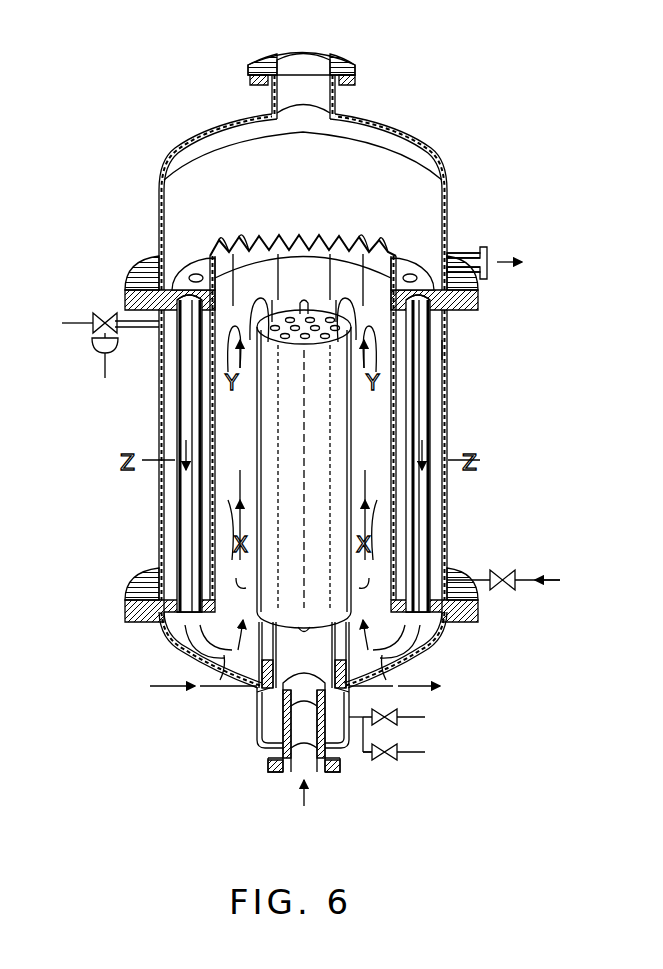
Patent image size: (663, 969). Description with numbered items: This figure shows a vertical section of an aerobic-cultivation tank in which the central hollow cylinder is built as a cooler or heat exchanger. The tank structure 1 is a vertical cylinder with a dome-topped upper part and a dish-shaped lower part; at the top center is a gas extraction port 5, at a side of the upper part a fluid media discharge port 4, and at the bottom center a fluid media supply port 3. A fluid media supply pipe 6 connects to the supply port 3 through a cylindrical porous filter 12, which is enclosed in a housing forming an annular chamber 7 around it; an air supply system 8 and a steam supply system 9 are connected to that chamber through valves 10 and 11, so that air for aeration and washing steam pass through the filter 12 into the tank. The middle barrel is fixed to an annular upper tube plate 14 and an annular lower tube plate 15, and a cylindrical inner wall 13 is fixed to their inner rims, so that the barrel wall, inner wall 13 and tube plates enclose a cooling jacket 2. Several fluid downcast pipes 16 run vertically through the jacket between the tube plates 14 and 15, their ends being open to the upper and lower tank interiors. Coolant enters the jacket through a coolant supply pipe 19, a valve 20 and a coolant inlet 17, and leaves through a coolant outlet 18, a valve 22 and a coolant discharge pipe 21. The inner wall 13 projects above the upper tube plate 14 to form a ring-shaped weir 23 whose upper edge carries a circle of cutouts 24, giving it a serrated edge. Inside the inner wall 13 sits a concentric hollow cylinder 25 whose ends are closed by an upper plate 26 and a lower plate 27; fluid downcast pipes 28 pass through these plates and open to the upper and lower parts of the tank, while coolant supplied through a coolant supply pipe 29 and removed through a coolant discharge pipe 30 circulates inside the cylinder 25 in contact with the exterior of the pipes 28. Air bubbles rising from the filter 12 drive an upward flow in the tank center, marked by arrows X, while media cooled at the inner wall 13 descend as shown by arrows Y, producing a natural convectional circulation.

The tank structure 1 is at (158, 537).
The cooling jacket 2 is at (436, 348).
The fluid media supply port 3 is at (304, 684).
The fluid media discharge port 4 is at (462, 253).
The gas extraction port 5 is at (305, 75).
The fluid media supply pipe 6 is at (296, 777).
The annular chamber 7 is at (258, 709).
The air supply system 8 is at (405, 713).
The steam supply system 9 is at (408, 759).
The valve 10 is at (400, 725).
The valve 11 is at (377, 761).
The cylindrical porous filter 12 is at (258, 741).
The cylindrical inner wall 13 is at (215, 415).
The upper tube plate 14 is at (181, 292).
The lower tube plate 15 is at (213, 614).
The fluid downcast pipes 16 is at (188, 411).
The coolant inlet 17 is at (440, 580).
The coolant outlet 18 is at (157, 330).
The coolant supply pipe 19 is at (530, 580).
The valve 20 is at (506, 592).
The coolant discharge pipe 21 is at (66, 322).
The valve 22 is at (103, 314).
The ring-shaped weir 23 is at (300, 242).
The cutouts 24 is at (249, 244).
The hollow cylinder 25 is at (350, 432).
The upper plate 26 is at (300, 341).
The lower plate 27 is at (304, 626).
The fluid downcast pipes 28 is at (326, 340).
The coolant supply pipe 29 is at (259, 660).
The coolant discharge pipe 30 is at (353, 660).